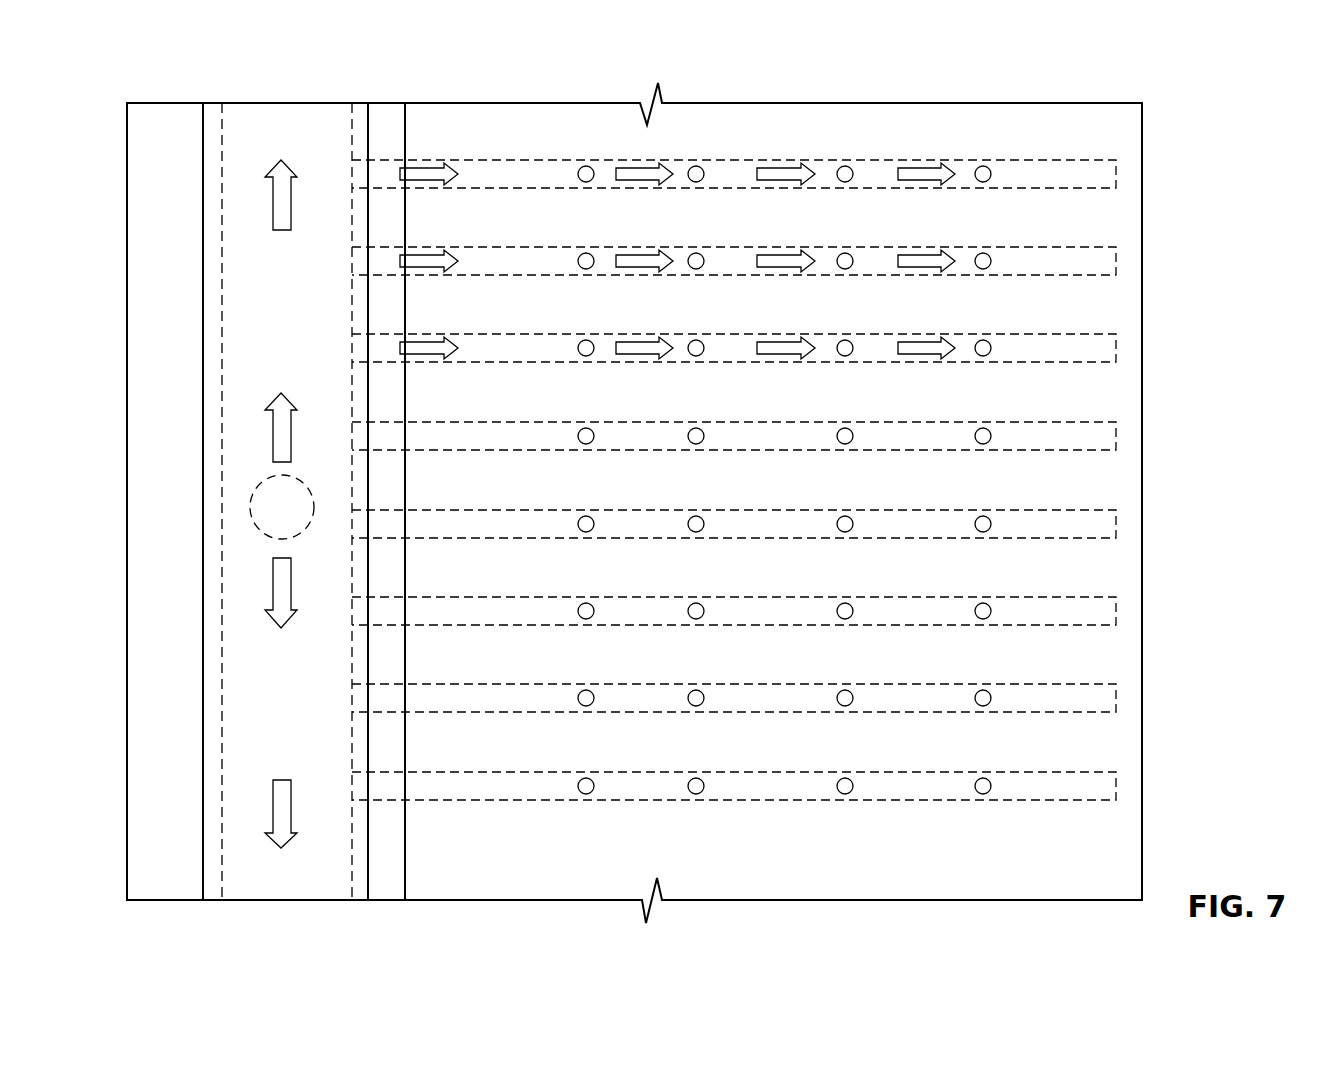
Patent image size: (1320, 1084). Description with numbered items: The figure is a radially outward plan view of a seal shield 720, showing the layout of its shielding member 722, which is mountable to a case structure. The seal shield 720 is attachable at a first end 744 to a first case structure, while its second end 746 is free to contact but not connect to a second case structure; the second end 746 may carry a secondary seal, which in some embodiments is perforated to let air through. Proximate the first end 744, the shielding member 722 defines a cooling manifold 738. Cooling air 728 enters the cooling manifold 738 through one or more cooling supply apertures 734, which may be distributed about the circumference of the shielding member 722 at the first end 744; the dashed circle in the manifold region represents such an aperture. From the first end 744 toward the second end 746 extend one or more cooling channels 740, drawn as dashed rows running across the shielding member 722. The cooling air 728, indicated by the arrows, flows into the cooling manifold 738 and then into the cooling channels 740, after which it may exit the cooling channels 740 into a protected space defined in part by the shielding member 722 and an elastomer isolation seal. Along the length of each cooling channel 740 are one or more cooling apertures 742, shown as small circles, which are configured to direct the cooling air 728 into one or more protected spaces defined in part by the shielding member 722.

The seal shield 720 is at (1158, 80).
The shielding member 722 is at (162, 118).
The cooling air 728 is at (428, 172).
The cooling supply aperture 734 is at (292, 520).
The cooling manifold 738 is at (222, 101).
The cooling channel 740 is at (1030, 160).
The cooling aperture 742 is at (586, 166).
The first end 744 is at (254, 900).
The second end 746 is at (1084, 900).